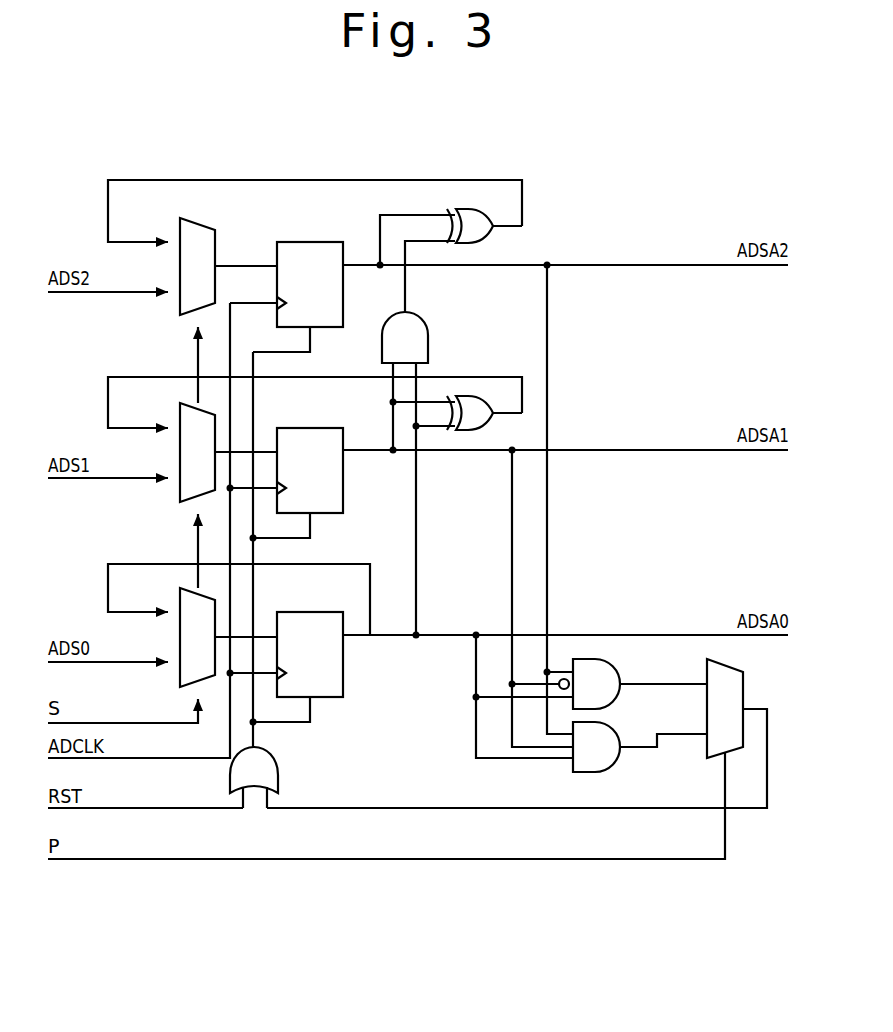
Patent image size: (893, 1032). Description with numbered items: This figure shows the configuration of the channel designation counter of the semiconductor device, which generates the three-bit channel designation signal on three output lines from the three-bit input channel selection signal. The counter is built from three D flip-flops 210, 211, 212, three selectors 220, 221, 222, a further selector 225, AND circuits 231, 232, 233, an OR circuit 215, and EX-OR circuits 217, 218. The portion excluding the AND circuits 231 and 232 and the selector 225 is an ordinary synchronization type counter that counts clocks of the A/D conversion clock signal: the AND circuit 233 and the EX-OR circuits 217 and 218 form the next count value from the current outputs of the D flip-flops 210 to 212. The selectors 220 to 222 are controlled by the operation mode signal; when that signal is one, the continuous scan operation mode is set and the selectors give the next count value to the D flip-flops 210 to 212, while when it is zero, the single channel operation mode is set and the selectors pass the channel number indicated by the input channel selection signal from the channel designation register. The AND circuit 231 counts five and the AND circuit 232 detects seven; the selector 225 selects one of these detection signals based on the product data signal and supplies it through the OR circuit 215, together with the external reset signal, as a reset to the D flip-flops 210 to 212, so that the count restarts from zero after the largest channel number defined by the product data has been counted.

The D flip-flop 210 is at (310, 611).
The D flip-flop 211 is at (310, 427).
The D flip-flop 212 is at (310, 241).
The OR circuit 215 is at (278, 763).
The EX-OR circuit 217 is at (475, 396).
The EX-OR circuit 218 is at (493, 231).
The selector 220 is at (179, 680).
The selector 221 is at (179, 494).
The selector 222 is at (179, 308).
The selector 225 is at (741, 672).
The AND circuit 231 is at (620, 671).
The AND circuit 232 is at (620, 760).
The AND circuit 233 is at (427, 322).